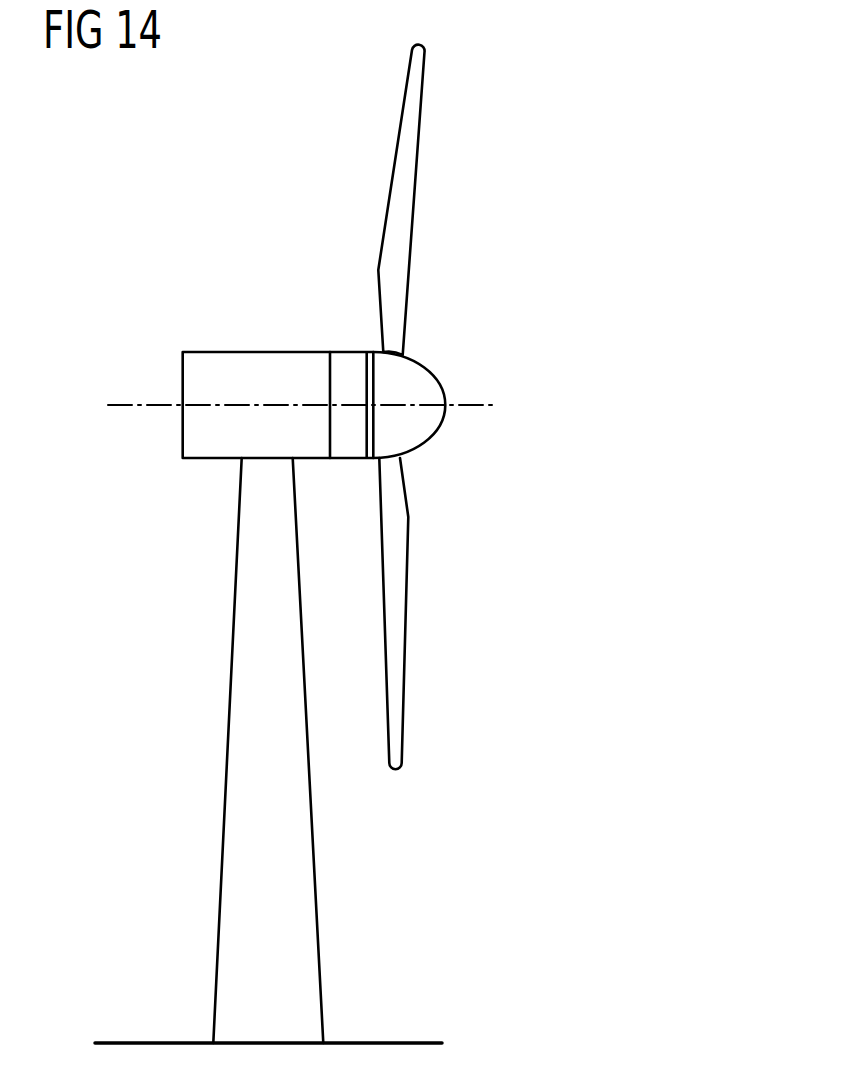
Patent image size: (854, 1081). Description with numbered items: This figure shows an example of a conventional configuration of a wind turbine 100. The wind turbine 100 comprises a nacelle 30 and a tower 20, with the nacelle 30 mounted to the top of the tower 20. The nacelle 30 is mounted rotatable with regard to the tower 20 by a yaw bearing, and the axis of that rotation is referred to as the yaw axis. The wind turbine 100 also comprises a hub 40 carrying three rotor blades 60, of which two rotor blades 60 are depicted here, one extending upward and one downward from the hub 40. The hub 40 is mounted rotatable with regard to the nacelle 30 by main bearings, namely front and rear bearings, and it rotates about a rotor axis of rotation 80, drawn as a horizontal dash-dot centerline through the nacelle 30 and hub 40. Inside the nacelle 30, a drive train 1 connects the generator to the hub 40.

The wind turbine 100 is at (142, 635).
The tower 20 is at (298, 843).
The nacelle 30 is at (260, 363).
The drive train 1 is at (352, 365).
The hub 40 is at (423, 382).
The rotor blades 60 is at (403, 203).
The rotor axis of rotation 80 is at (153, 402).